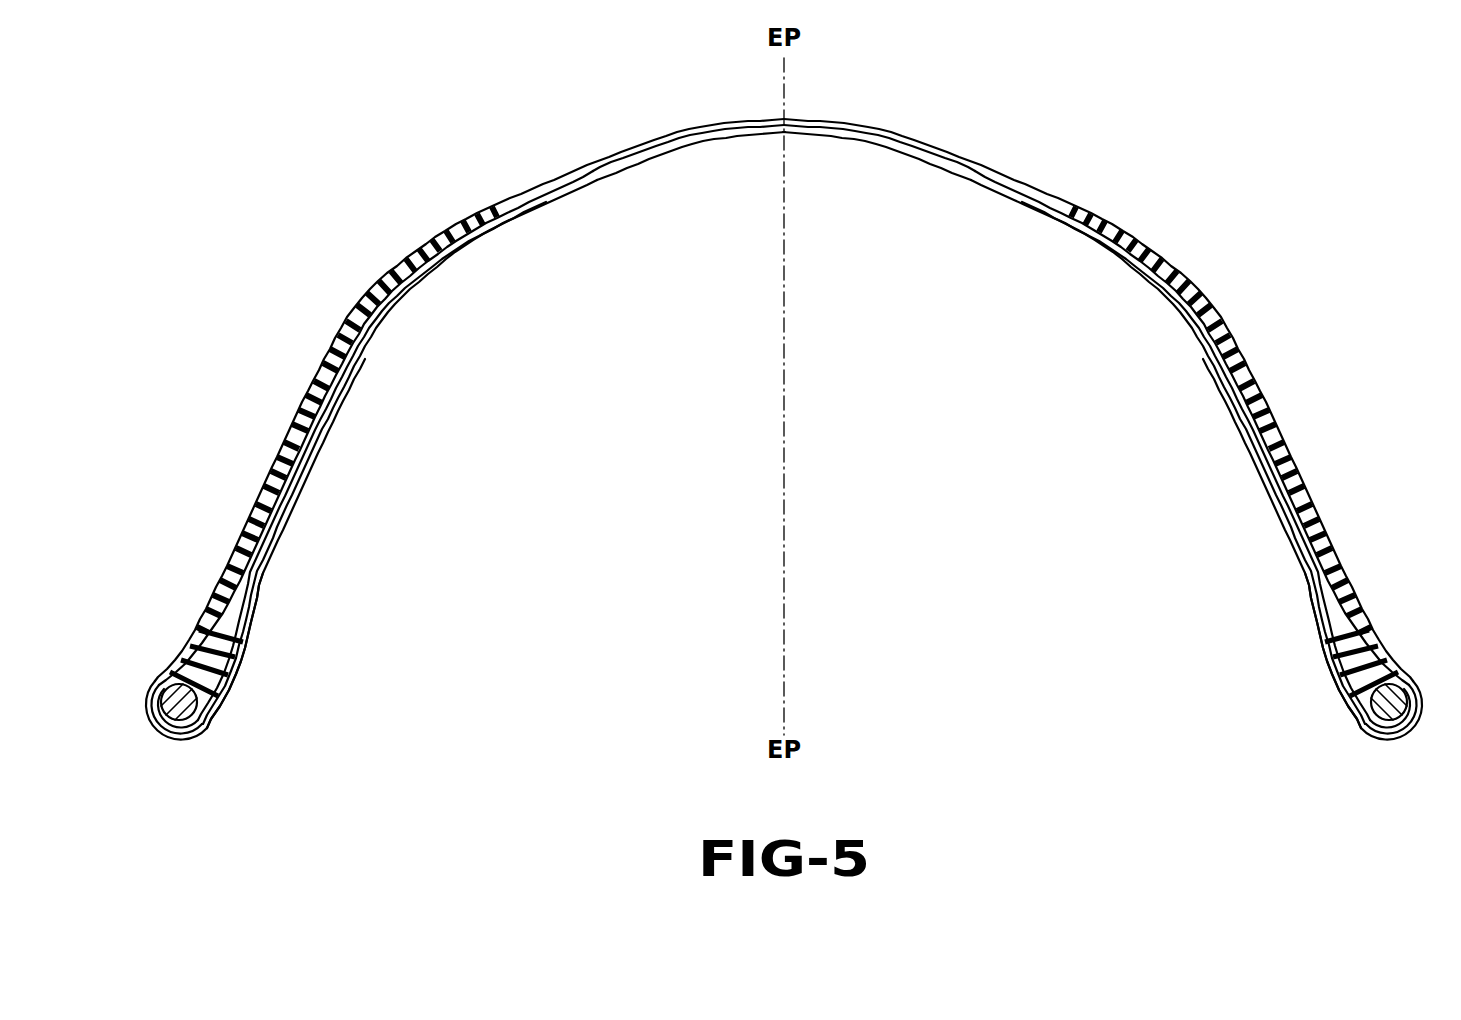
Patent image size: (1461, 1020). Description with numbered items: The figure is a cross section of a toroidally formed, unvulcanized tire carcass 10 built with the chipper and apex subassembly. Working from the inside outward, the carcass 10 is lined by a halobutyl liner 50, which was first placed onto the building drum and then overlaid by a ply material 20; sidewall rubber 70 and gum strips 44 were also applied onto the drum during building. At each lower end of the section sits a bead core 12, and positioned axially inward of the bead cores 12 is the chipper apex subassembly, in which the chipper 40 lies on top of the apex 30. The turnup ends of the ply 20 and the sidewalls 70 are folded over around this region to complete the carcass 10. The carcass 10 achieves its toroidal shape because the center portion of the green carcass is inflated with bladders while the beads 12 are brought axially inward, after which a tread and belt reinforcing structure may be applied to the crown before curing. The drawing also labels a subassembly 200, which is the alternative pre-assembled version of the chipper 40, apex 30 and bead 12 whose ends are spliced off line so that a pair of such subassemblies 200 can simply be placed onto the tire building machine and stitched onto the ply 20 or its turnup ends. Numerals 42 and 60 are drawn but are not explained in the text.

The tire carcass 10 is at (1032, 169).
The ply material 20 is at (897, 129).
The halobutyl liner 50 is at (710, 141).
The sidewall rubber 70 is at (380, 292).
The gum strips 44 is at (395, 313).
The chipper 40 is at (195, 662).
The bead portion 42 is at (195, 662).
The subassembly 200 is at (261, 646).
The apex 30 is at (220, 678).
The bead core 12 is at (190, 712).
The chafer 60 is at (181, 742).